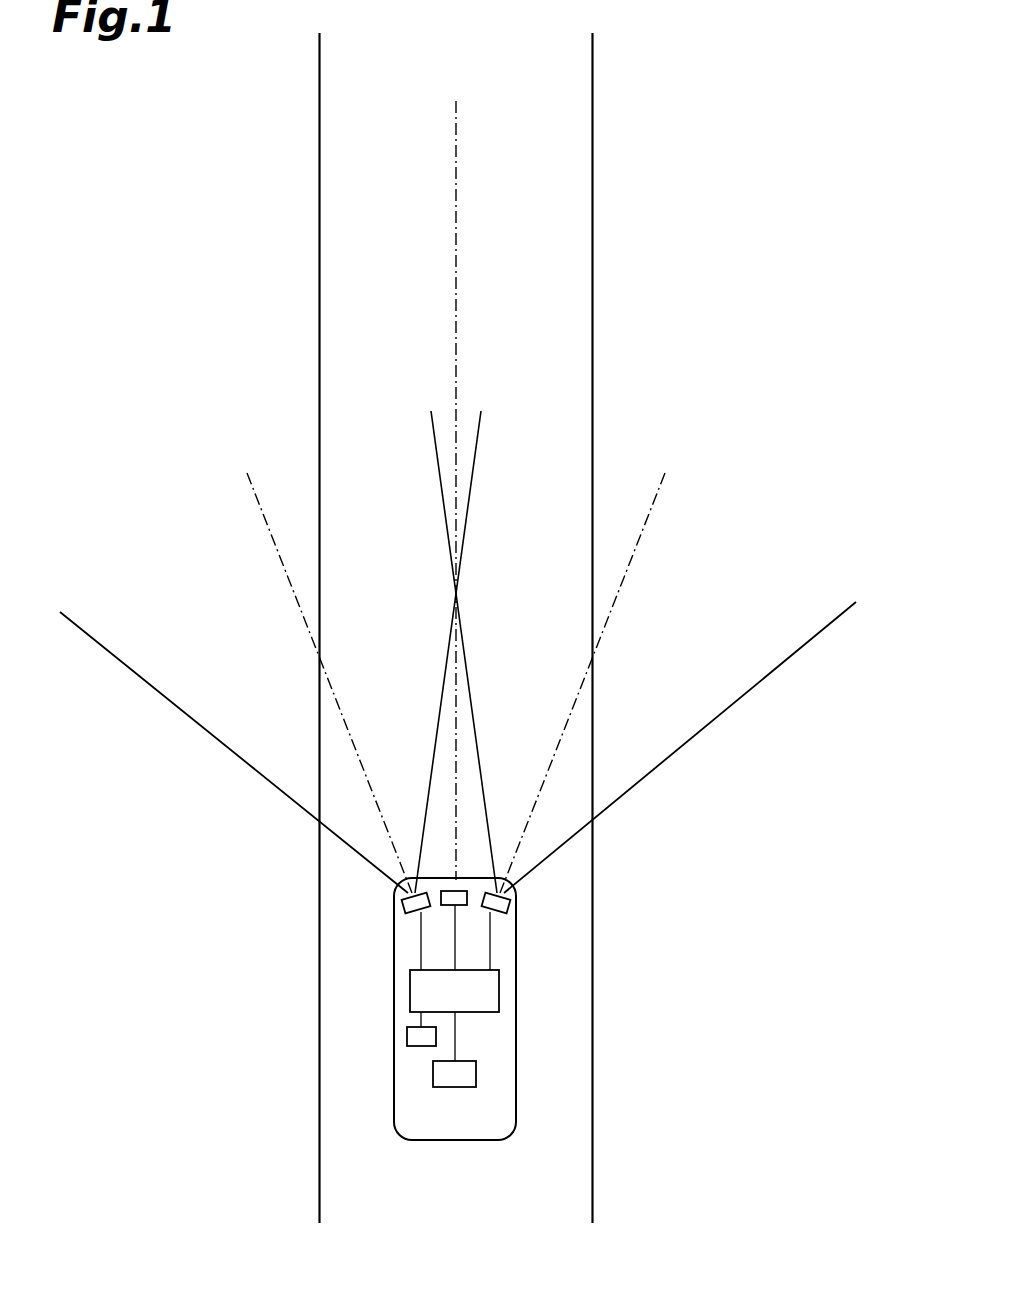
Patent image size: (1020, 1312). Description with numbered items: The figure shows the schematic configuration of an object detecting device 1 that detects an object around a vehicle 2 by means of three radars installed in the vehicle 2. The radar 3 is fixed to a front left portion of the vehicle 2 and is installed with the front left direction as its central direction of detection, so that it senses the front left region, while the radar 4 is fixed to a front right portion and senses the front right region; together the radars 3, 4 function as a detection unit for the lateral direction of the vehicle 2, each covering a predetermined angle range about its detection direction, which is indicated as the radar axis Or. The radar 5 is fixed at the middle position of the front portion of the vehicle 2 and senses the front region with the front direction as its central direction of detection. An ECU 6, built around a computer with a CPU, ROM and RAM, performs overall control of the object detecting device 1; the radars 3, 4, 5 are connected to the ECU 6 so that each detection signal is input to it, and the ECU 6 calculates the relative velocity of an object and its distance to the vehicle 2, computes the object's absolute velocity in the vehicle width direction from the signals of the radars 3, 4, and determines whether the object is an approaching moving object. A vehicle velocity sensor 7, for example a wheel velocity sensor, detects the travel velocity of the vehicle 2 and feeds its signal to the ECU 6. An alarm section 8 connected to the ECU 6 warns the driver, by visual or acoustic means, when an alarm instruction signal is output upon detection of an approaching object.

The object detecting device 1 is at (461, 1033).
The vehicle 2 is at (516, 1105).
The radar 3 is at (404, 902).
The radar 4 is at (506, 904).
The radar 5 is at (460, 906).
The ECU 6 is at (410, 986).
The vehicle velocity sensor 7 is at (477, 1069).
The alarm section 8 is at (407, 1033).
The radar axis Or is at (269, 533).